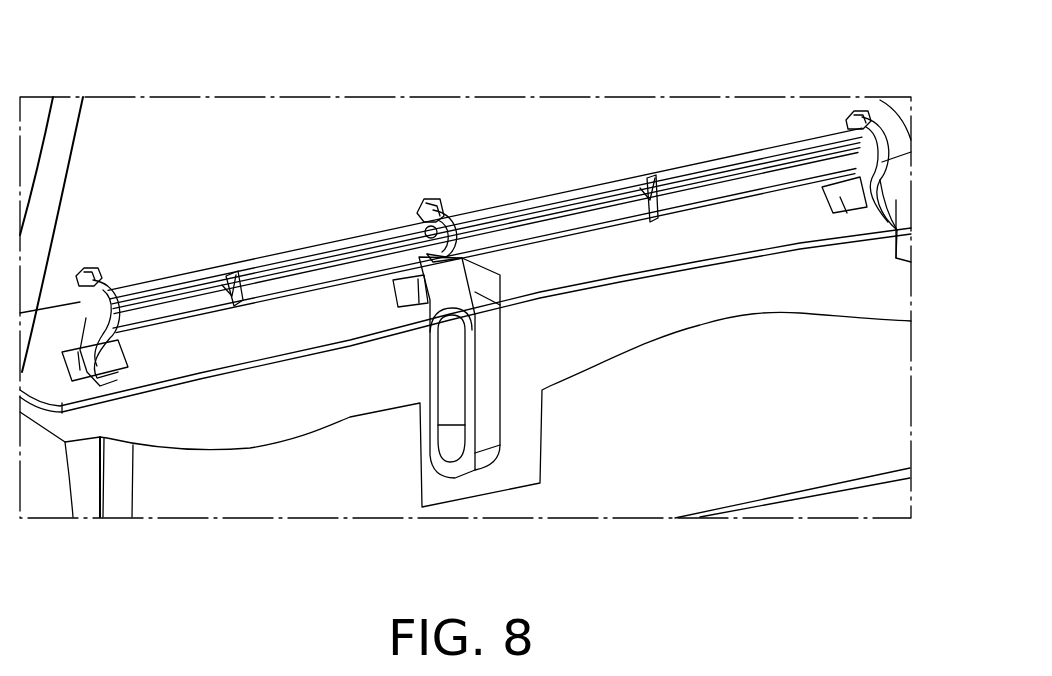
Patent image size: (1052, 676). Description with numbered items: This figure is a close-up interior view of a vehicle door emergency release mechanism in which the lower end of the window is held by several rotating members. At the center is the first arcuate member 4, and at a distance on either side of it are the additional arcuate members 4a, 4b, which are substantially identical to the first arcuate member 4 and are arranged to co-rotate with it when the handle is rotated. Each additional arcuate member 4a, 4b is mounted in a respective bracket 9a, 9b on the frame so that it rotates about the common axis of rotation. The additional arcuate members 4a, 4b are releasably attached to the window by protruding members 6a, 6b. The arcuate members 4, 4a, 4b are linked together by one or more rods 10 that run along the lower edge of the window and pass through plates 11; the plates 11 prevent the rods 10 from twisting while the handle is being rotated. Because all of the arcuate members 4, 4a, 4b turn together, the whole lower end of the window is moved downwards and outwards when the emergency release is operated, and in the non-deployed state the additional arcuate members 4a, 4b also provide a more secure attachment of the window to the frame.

The first arcuate member 4 is at (444, 200).
The additional arcuate member 4a is at (105, 276).
The additional arcuate member 4b is at (878, 118).
The protruding member 6a is at (80, 276).
The protruding member 6b is at (847, 115).
The bracket 9a is at (77, 365).
The bracket 9b is at (848, 213).
The rod 10 is at (340, 285).
The plate 11 is at (243, 300).